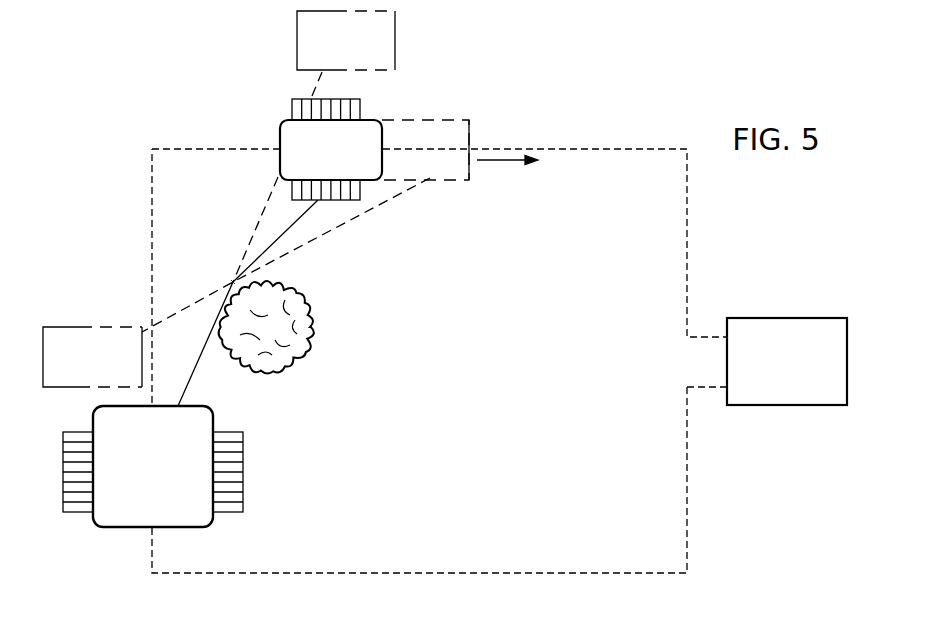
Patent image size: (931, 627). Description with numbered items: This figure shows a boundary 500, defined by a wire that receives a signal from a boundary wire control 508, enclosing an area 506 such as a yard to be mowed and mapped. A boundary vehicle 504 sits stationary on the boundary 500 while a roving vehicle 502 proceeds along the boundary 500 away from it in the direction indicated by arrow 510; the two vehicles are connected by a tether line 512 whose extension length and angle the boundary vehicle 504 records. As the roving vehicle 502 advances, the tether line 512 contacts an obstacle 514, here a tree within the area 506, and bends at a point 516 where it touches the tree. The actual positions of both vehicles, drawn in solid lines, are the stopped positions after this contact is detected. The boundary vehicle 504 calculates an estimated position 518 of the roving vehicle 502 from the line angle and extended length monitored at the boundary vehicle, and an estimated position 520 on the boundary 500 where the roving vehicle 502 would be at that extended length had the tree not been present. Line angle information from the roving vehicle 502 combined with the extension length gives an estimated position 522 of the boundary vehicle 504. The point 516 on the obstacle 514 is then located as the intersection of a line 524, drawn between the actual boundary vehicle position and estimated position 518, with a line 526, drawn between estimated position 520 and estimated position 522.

The boundary 500 is at (687, 487).
The roving vehicle 502 is at (280, 135).
The boundary vehicle 504 is at (125, 527).
The area 506 is at (517, 418).
The boundary wire control 508 is at (787, 318).
The arrow 510 is at (500, 162).
The tether line 512 is at (280, 238).
The obstacle 514 is at (315, 338).
The point 516 is at (233, 282).
The estimated position 518 is at (297, 40).
The estimated position 520 is at (430, 119).
The estimated position 522 is at (85, 327).
The line 524 is at (260, 221).
The line 526 is at (357, 219).